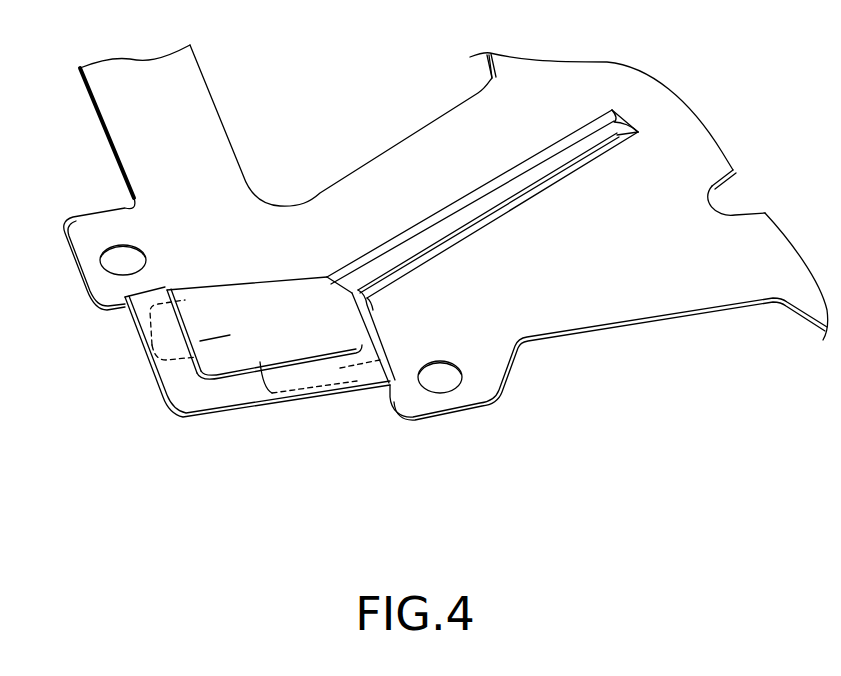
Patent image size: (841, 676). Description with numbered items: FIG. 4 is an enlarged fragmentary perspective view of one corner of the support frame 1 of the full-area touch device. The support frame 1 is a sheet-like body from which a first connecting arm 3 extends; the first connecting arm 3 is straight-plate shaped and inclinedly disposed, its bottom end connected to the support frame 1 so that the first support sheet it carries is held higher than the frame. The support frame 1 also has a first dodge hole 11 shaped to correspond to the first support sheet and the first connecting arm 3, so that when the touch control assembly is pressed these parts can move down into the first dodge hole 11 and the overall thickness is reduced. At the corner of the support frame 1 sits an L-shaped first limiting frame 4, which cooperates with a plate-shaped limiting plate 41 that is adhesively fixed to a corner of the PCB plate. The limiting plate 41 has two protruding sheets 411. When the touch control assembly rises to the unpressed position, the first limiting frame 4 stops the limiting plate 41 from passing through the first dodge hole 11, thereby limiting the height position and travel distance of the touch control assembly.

The support frame 1 is at (122, 127).
The first dodge hole 11 is at (530, 205).
The first connecting arm 3 is at (428, 237).
The first limiting frame 4 is at (190, 400).
The limiting plate 41 is at (323, 342).
The protruding sheet 411 is at (160, 327).